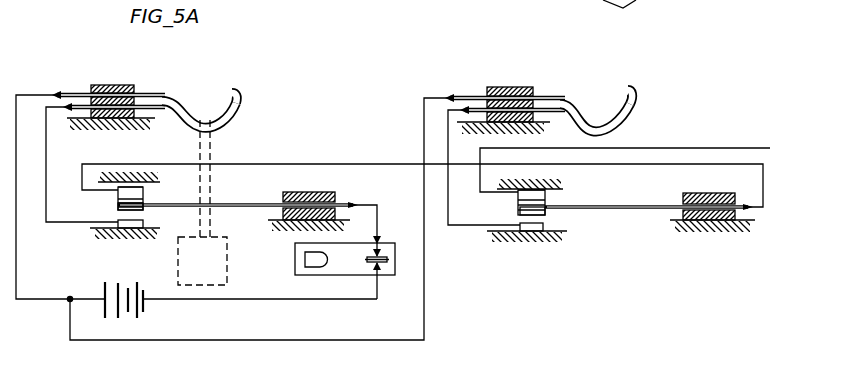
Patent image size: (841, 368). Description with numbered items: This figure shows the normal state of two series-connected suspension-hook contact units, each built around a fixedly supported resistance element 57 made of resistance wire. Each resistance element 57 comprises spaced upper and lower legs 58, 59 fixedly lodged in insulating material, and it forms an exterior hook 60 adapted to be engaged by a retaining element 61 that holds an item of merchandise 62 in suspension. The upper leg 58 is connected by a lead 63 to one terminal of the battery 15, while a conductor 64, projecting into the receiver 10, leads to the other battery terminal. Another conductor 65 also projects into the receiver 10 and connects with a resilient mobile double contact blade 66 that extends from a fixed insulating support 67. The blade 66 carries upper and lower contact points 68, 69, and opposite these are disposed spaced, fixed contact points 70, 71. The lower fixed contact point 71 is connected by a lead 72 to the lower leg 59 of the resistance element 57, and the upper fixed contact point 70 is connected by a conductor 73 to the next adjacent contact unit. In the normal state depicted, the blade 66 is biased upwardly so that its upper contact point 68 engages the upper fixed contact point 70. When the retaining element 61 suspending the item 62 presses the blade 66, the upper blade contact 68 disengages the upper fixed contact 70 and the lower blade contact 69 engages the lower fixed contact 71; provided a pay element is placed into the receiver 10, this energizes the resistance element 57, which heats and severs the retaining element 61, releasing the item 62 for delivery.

The receiver 10 is at (395, 268).
The battery 15 is at (148, 313).
The resistance element 57 is at (174, 86).
The upper leg 58 is at (68, 93).
The lower leg 59 is at (80, 105).
The exterior hook 60 is at (242, 96).
The retaining element 61 is at (208, 157).
The item of merchandise 62 is at (228, 270).
The lead 63 is at (16, 250).
The conductor 64 is at (345, 299).
The conductor 65 is at (377, 216).
The resilient mobile double contact blade 66 is at (232, 203).
The fixed insulating support 67 is at (305, 193).
The upper contact point 68 is at (143, 198).
The lower contact point 69 is at (143, 208).
The upper fixed contact point 70 is at (137, 190).
The lower fixed contact point 71 is at (130, 228).
The lead 72 is at (47, 164).
The conductor 73 is at (258, 164).